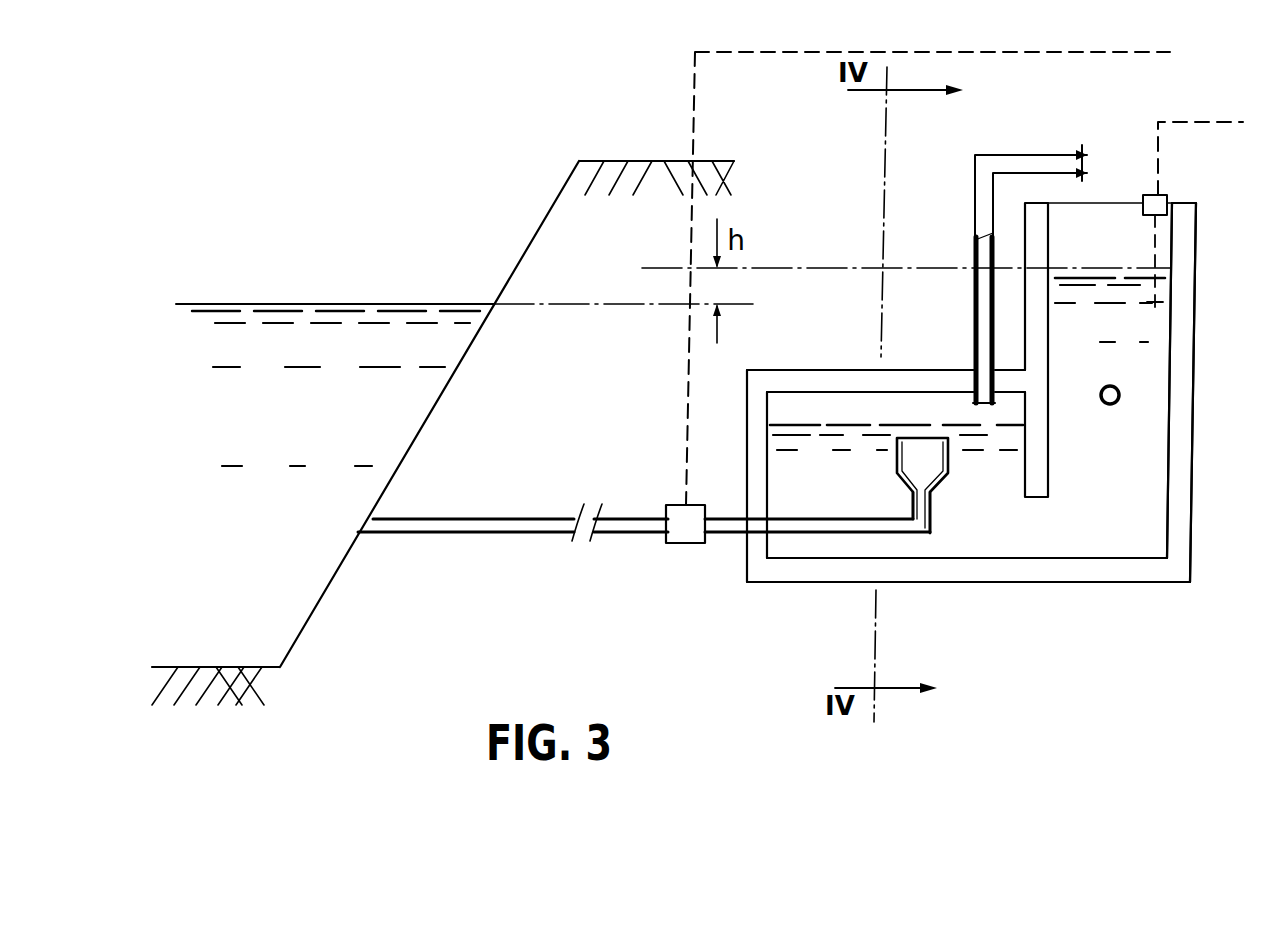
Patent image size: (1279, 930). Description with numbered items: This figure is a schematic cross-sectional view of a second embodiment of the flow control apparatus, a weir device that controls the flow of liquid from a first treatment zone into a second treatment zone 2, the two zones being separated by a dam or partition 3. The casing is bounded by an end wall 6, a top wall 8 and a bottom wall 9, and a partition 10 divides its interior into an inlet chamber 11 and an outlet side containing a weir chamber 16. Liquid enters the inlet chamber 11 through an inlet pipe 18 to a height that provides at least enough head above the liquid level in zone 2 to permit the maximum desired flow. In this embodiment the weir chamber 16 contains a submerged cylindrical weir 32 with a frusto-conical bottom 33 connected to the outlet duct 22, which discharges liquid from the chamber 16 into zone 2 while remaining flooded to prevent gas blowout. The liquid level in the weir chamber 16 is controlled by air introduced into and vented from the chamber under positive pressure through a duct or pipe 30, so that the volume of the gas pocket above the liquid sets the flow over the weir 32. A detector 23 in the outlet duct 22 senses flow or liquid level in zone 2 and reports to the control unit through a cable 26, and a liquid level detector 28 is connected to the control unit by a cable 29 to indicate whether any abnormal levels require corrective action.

The second treatment zone 2 is at (312, 427).
The dam or partition 3 is at (556, 197).
The end wall 6 is at (1191, 466).
The top wall 8 is at (811, 370).
The bottom wall 9 is at (1043, 582).
The partition 10 is at (1044, 499).
The inlet chamber 11 is at (1163, 336).
The weir chamber 16 is at (904, 405).
The inlet pipe 18 is at (1120, 406).
The outlet duct 22 is at (535, 540).
The detector 23 is at (687, 546).
The cable 26 is at (695, 50).
The liquid level detector 28 is at (1168, 197).
The cable 29 is at (1195, 120).
The duct or pipe 30 is at (1040, 160).
The submerged cylindrical weir 32 is at (937, 452).
The frusto-conical bottom 33 is at (905, 484).